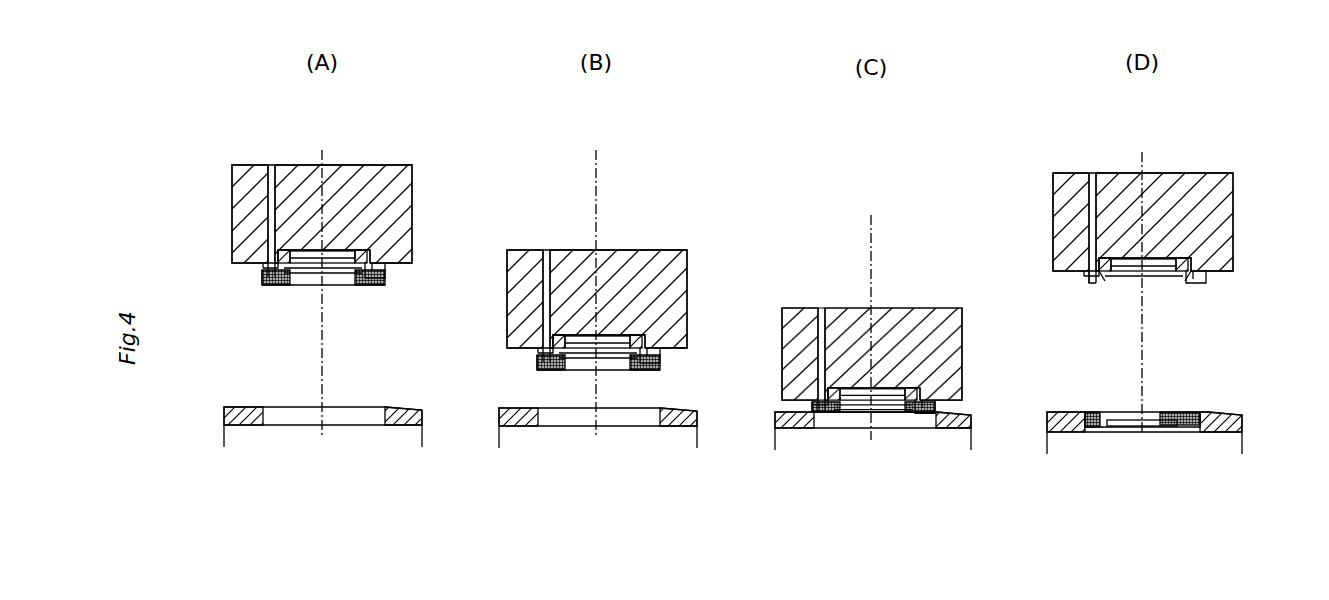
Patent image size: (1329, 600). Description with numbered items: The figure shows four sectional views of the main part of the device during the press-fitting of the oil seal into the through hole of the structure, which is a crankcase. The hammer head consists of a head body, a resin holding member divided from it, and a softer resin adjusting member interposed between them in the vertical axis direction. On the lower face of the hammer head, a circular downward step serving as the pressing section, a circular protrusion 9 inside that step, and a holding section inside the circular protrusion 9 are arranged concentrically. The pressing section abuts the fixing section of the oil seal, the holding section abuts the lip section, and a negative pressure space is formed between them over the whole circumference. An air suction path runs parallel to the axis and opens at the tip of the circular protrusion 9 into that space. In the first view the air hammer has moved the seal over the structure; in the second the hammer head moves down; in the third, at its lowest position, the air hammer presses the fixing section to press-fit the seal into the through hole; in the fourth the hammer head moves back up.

The circular protrusion 9 is at (1092, 284).